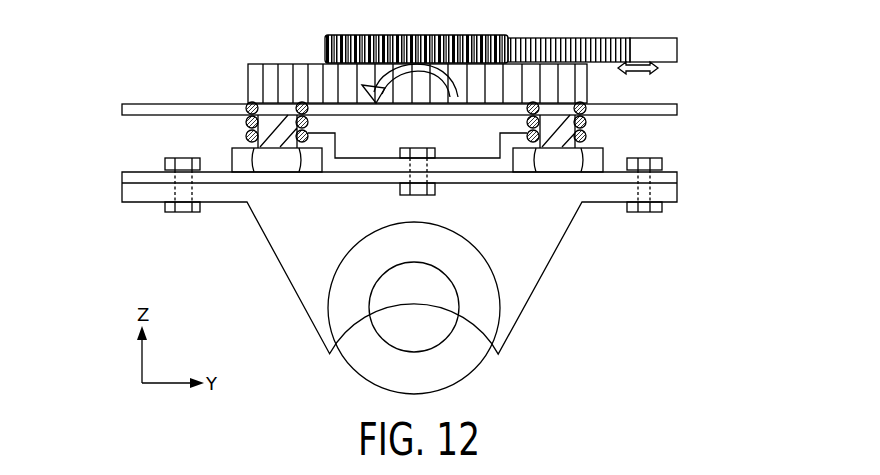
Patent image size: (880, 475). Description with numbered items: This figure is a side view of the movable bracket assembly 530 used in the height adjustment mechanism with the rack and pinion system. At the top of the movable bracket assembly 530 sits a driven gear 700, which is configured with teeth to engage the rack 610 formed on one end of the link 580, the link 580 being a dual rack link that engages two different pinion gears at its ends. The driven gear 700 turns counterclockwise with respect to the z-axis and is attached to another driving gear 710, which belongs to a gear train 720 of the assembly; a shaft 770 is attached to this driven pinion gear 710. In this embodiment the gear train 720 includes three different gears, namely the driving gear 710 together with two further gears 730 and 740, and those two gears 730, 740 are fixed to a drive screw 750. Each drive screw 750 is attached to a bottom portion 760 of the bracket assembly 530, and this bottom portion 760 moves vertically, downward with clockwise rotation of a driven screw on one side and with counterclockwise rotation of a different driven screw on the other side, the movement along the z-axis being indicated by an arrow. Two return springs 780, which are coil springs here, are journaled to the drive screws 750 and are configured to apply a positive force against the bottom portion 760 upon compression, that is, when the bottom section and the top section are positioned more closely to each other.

The movable bracket assembly 530 is at (737, 25).
The link 580 is at (660, 42).
The rack 610 is at (560, 43).
The driven gear 700 is at (360, 43).
The driving gear 710 is at (348, 95).
The gear train 720 is at (112, 47).
The gear 730 is at (257, 72).
The gear 740 is at (588, 81).
The drive screw 750 is at (263, 128).
The bottom portion 760 is at (670, 175).
The shaft 770 is at (415, 117).
The return springs 780 is at (310, 129).